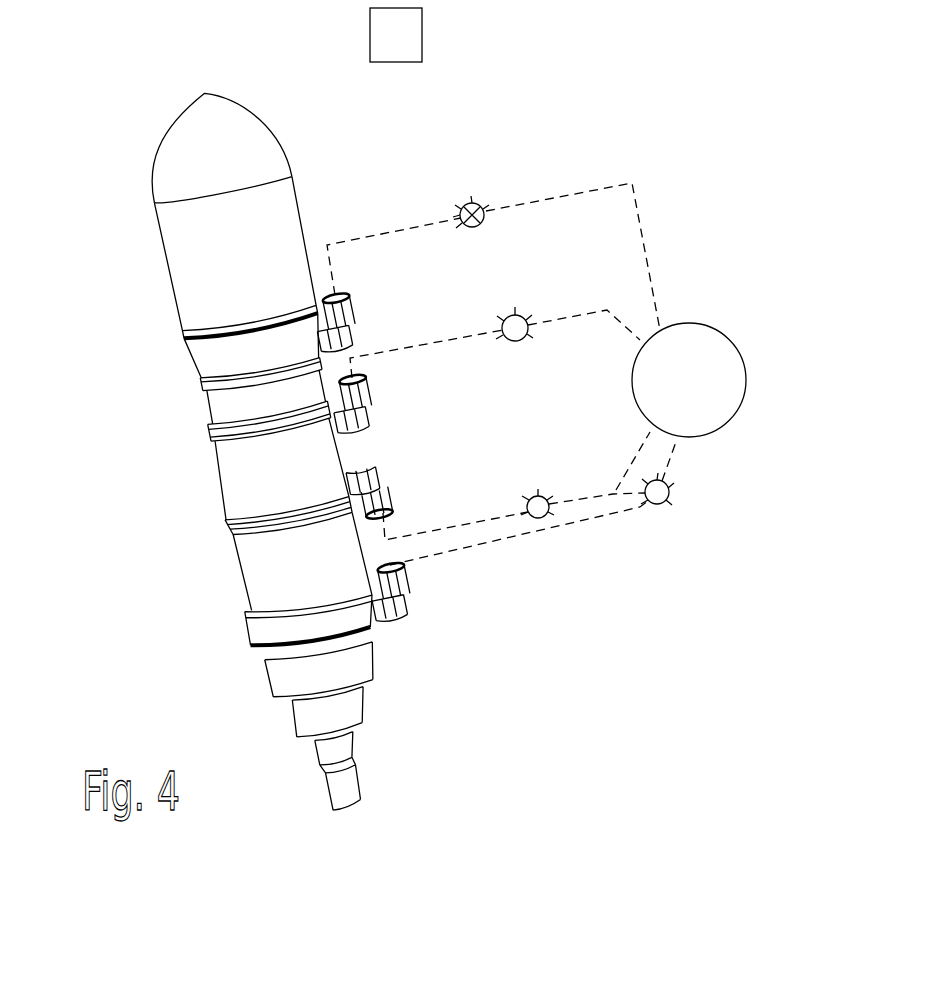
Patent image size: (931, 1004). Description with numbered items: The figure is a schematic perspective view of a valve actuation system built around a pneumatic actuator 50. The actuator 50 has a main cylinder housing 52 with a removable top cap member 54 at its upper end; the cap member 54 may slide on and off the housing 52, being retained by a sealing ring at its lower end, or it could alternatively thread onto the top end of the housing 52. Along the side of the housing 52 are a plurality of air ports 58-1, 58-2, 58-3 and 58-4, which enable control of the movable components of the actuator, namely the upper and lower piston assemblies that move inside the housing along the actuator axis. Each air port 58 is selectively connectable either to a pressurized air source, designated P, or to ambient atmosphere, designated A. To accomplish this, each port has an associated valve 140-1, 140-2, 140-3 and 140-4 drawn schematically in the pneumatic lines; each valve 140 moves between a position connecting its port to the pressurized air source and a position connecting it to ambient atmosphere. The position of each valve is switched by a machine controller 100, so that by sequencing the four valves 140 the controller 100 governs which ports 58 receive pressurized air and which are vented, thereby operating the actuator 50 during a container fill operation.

The machine controller 100 is at (396, 35).
The pneumatic actuator 50 is at (364, 164).
The main cylinder housing 52 is at (220, 498).
The removable top cap member 54 is at (172, 287).
The air port 58 is at (421, 632).
The air port 58-1 is at (409, 581).
The air port 58-2 is at (391, 492).
The air port 58-3 is at (369, 392).
The air port 58-4 is at (355, 307).
The valve 140 is at (685, 538).
The valve 140-1 is at (668, 484).
The valve 140-2 is at (550, 492).
The valve 140-3 is at (521, 341).
The valve 140-4 is at (474, 228).